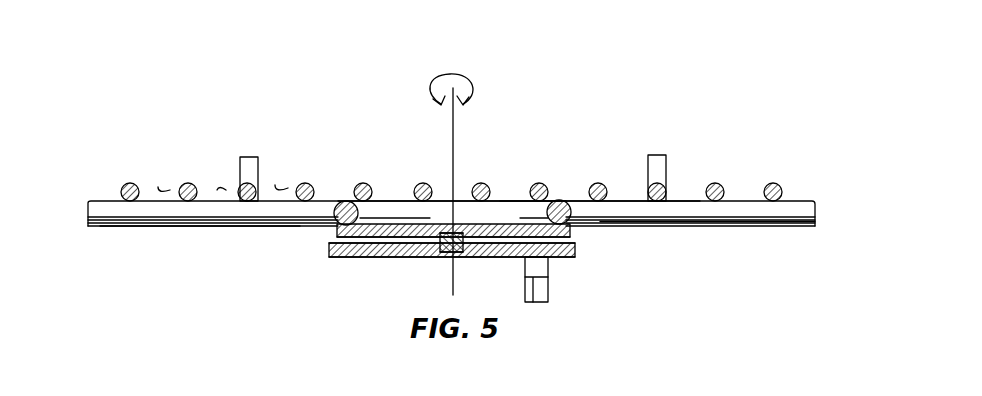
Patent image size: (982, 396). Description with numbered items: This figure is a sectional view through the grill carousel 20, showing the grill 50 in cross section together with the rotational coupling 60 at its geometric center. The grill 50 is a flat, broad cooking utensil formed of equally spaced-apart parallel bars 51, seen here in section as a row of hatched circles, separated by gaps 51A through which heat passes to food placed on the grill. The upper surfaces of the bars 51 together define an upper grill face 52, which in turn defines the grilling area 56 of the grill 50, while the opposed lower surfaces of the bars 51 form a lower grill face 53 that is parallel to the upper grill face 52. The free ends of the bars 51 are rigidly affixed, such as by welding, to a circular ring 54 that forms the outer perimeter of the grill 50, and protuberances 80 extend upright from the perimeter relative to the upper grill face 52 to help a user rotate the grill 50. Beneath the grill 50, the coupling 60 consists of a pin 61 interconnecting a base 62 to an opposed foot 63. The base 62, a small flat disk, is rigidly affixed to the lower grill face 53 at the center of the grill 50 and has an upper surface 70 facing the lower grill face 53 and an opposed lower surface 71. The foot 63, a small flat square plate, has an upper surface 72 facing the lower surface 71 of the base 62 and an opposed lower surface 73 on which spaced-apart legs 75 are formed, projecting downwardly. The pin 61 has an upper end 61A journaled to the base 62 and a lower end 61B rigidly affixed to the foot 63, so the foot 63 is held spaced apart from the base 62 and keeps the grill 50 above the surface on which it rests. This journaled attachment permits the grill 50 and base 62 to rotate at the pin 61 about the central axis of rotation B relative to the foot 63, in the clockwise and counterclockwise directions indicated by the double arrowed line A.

The grill carousel 20 is at (677, 94).
The grill 50 is at (90, 211).
The bars 51 is at (132, 184).
The gaps 51A is at (158, 187).
The upper grill face 52 is at (588, 177).
The lower grill face 53 is at (158, 228).
The circular ring 54 is at (740, 218).
The grilling area 56 is at (374, 161).
The coupling 60 is at (590, 247).
The pin 61 is at (466, 245).
The upper end of pin 61A is at (455, 231).
The lower end of pin 61B is at (446, 254).
The base 62 is at (350, 236).
The foot 63 is at (577, 258).
The upper surface of base 70 is at (543, 185).
The lower surface of base 71 is at (362, 236).
The upper surface of foot 72 is at (390, 243).
The lower surface of foot 73 is at (378, 257).
The legs 75 is at (545, 285).
The protuberances 80 is at (258, 166).
The double arrowed line A is at (476, 82).
The axis of rotation B is at (455, 138).